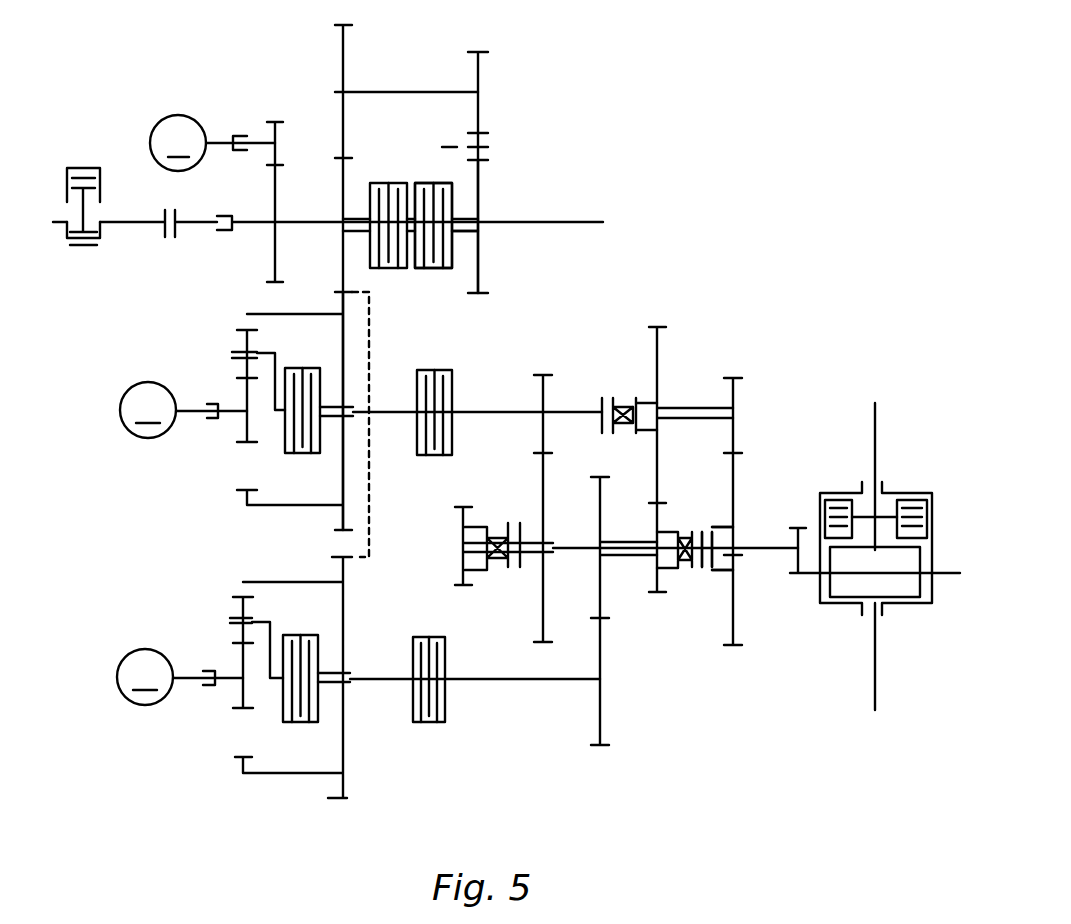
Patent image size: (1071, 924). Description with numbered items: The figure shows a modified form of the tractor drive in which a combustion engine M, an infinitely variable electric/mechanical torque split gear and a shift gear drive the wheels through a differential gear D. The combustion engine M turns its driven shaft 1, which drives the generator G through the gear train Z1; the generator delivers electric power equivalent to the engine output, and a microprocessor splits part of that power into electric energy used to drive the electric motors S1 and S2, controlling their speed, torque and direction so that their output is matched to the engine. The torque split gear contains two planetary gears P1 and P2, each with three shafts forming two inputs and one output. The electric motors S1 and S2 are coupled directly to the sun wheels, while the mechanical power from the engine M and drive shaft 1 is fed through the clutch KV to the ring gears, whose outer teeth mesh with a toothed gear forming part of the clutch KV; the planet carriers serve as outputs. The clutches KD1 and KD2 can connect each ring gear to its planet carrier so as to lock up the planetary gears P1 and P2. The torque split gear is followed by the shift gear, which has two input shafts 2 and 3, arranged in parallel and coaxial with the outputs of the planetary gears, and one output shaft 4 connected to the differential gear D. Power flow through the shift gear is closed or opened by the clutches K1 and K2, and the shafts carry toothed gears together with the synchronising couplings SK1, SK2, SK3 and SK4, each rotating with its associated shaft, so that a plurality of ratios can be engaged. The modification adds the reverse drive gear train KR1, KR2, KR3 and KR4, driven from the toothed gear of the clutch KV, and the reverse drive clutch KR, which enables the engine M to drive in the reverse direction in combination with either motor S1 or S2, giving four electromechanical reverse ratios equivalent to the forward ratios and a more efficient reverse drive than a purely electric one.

The combustion engine M is at (82, 165).
The driven shaft 1 is at (181, 226).
The generator G is at (212, 143).
The gear train Z1 is at (284, 152).
The reverse drive gear train gear KR1 is at (343, 63).
The reverse drive gear train gear KR2 is at (481, 70).
The reverse drive gear train gear KR3 is at (490, 152).
The reverse drive gear train gear KR4 is at (481, 191).
The clutch KV is at (388, 183).
The reverse drive clutch KR is at (432, 270).
The planetary gear P1 is at (234, 369).
The electric motor S1 is at (183, 410).
The clutch KD1 is at (296, 453).
The clutch K1 is at (413, 380).
The input shaft 2 is at (496, 410).
The synchronising coupling SK1 is at (648, 398).
The synchronising coupling SK2 is at (480, 527).
The synchronising coupling SK3 is at (667, 531).
The synchronising coupling SK4 is at (728, 569).
The output shaft 4 is at (763, 547).
The differential gear D is at (904, 486).
The electric motor S2 is at (180, 677).
The planetary gear P2 is at (350, 736).
The clutch KD2 is at (303, 634).
The clutch K2 is at (400, 634).
The input shaft 3 is at (507, 682).